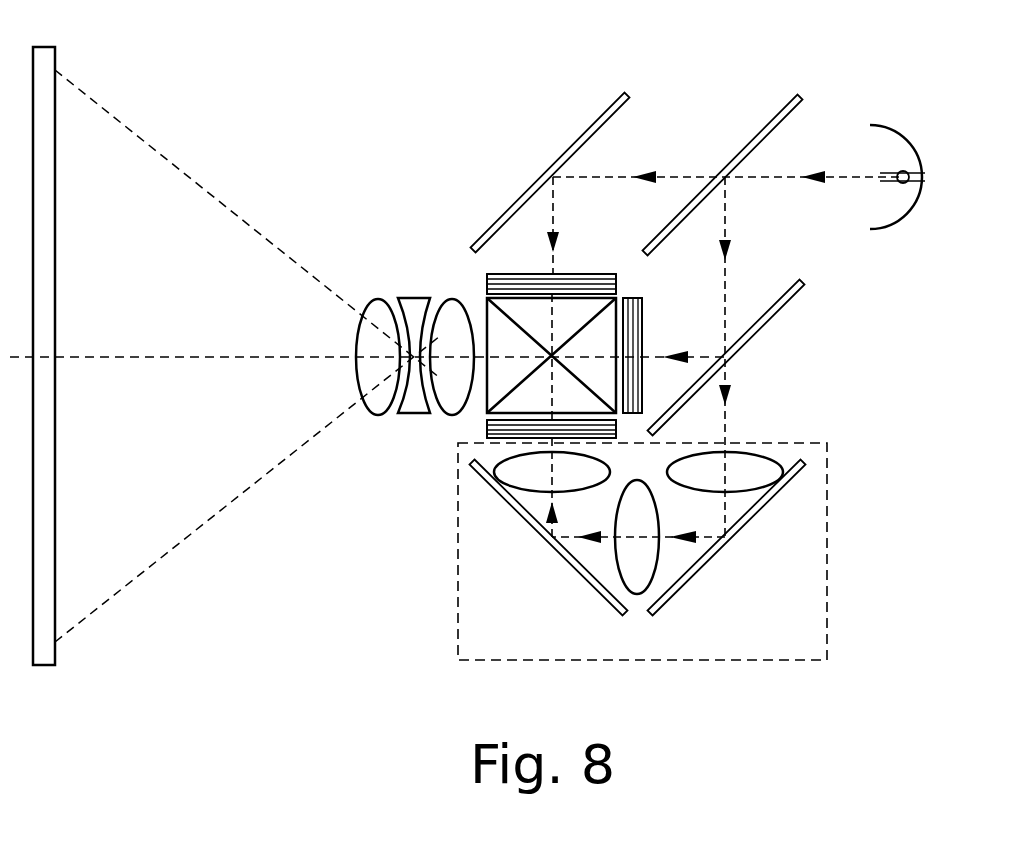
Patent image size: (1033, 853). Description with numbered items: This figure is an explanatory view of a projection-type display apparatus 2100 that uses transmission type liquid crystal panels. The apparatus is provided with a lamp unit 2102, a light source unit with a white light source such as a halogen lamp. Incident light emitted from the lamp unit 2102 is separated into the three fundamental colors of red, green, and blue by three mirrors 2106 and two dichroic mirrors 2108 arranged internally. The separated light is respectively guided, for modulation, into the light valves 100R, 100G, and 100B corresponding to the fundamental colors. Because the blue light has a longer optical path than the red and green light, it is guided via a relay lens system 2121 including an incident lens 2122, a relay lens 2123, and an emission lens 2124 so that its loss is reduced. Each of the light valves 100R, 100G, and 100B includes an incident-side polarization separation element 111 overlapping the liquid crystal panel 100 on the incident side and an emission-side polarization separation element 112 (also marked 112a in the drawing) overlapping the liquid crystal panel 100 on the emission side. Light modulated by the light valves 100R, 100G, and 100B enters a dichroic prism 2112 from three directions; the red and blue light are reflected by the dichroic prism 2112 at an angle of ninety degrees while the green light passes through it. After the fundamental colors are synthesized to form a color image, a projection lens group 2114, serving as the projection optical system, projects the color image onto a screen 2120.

The projection-type display apparatus 2100 is at (650, 62).
The lamp unit 2102 is at (904, 170).
The mirror 2106 is at (593, 130).
The dichroic mirror 2108 is at (765, 128).
The dichroic prism 2112 is at (497, 272).
The projection lens group 2114 is at (472, 286).
The screen 2120 is at (55, 655).
The relay lens system 2121 is at (830, 490).
The incident lens 2122 is at (756, 488).
The relay lens 2123 is at (655, 570).
The emission lens 2124 is at (522, 480).
The liquid crystal panel 100 is at (582, 285).
The light valve 100R is at (526, 260).
The light valve 100G is at (660, 322).
The light valve 100B is at (457, 424).
The incident-side polarization separation element 111 is at (570, 274).
The emission-side polarization separation element 112 is at (616, 290).
The surface of optical element 112a is at (632, 355).